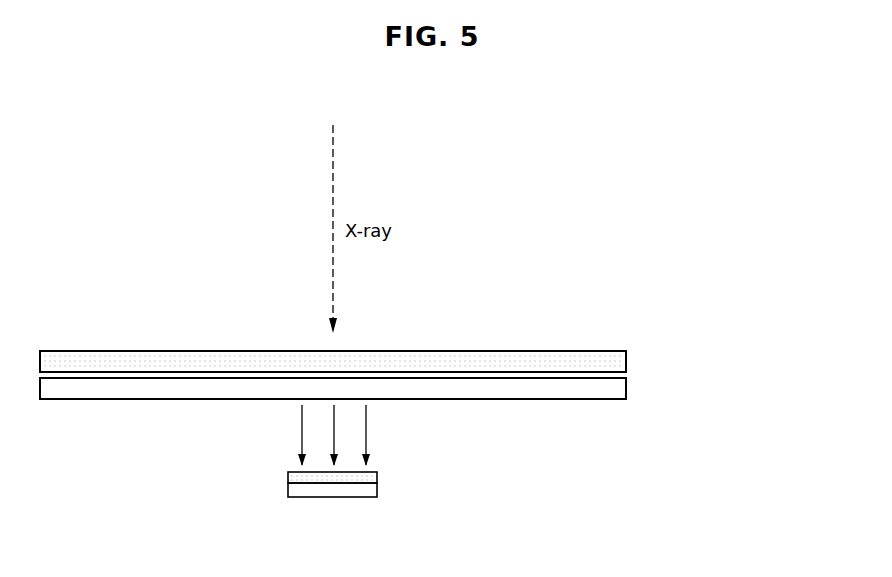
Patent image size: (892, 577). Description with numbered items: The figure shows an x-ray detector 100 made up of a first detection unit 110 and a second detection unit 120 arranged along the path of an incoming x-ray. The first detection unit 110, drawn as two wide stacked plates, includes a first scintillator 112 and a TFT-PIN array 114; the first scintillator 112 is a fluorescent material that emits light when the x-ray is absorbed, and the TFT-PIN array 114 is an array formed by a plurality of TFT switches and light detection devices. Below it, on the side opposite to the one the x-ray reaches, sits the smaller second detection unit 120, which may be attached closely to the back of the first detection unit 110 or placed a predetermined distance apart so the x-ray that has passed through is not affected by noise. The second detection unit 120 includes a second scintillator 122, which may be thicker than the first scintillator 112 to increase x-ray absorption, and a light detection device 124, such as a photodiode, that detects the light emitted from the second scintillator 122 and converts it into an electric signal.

The x-ray detector 100 is at (432, 430).
The first detection unit 110 is at (400, 375).
The first scintillator 112 is at (626, 361).
The TFT-PIN array 114 is at (626, 388).
The second detection unit 120 is at (399, 483).
The second scintillator 122 is at (377, 478).
The light detection device 124 is at (377, 490).